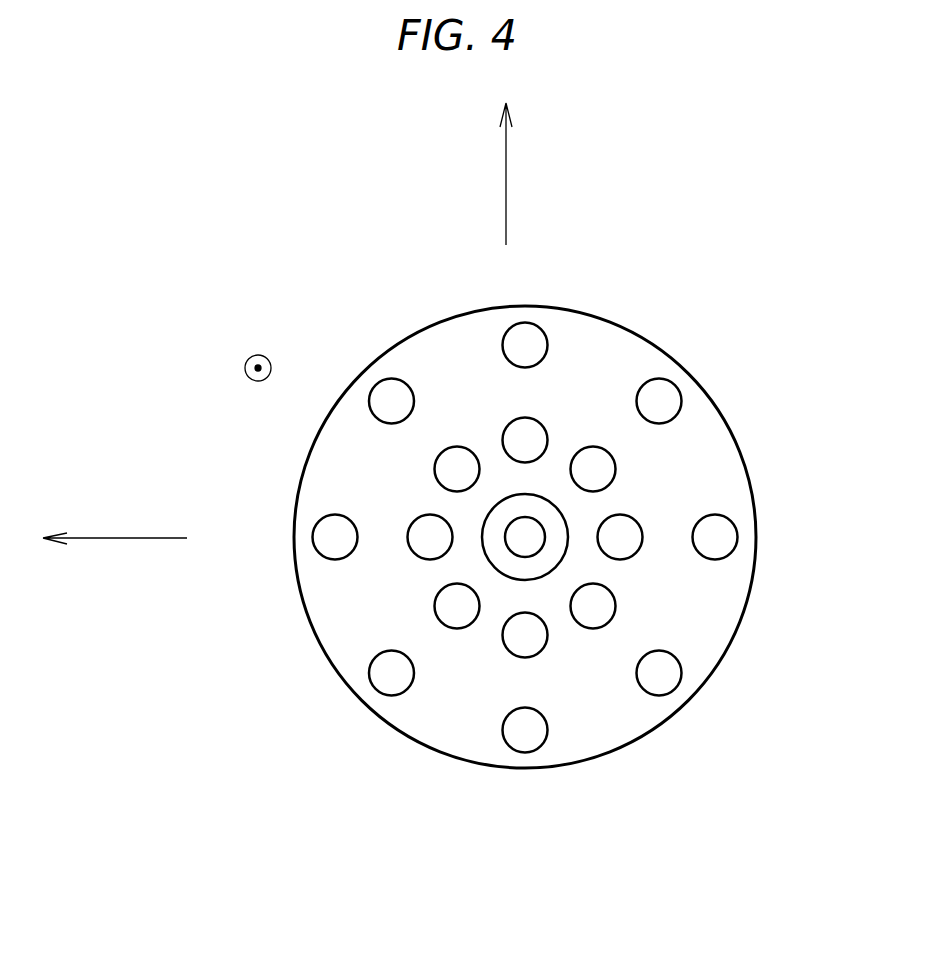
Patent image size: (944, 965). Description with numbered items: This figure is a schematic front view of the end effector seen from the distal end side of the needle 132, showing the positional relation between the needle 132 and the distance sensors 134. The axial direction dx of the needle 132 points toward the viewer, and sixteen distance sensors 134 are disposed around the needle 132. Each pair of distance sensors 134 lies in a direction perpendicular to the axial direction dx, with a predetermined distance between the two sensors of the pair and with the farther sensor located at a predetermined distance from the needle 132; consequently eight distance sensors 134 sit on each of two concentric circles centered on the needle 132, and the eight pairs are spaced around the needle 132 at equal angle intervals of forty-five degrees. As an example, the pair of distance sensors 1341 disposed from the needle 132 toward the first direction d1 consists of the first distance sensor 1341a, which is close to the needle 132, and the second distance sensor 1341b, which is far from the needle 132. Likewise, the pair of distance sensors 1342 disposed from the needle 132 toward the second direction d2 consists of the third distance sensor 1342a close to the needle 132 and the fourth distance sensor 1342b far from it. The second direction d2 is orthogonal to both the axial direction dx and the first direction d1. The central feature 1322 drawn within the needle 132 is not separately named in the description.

The needle 132 is at (547, 552).
The central shaft hole 1322 is at (540, 542).
The distance sensors 134 is at (448, 527).
The first group of through holes 1341 is at (248, 490).
The first distance sensor 1341a is at (420, 516).
The second distance sensor 1341b is at (333, 513).
The second group of through holes 1342 is at (610, 336).
The third distance sensor 1342a is at (510, 418).
The fourth distance sensor 1342b is at (536, 323).
The axial direction dx is at (248, 358).
The first direction d1 is at (112, 538).
The second direction d2 is at (507, 178).